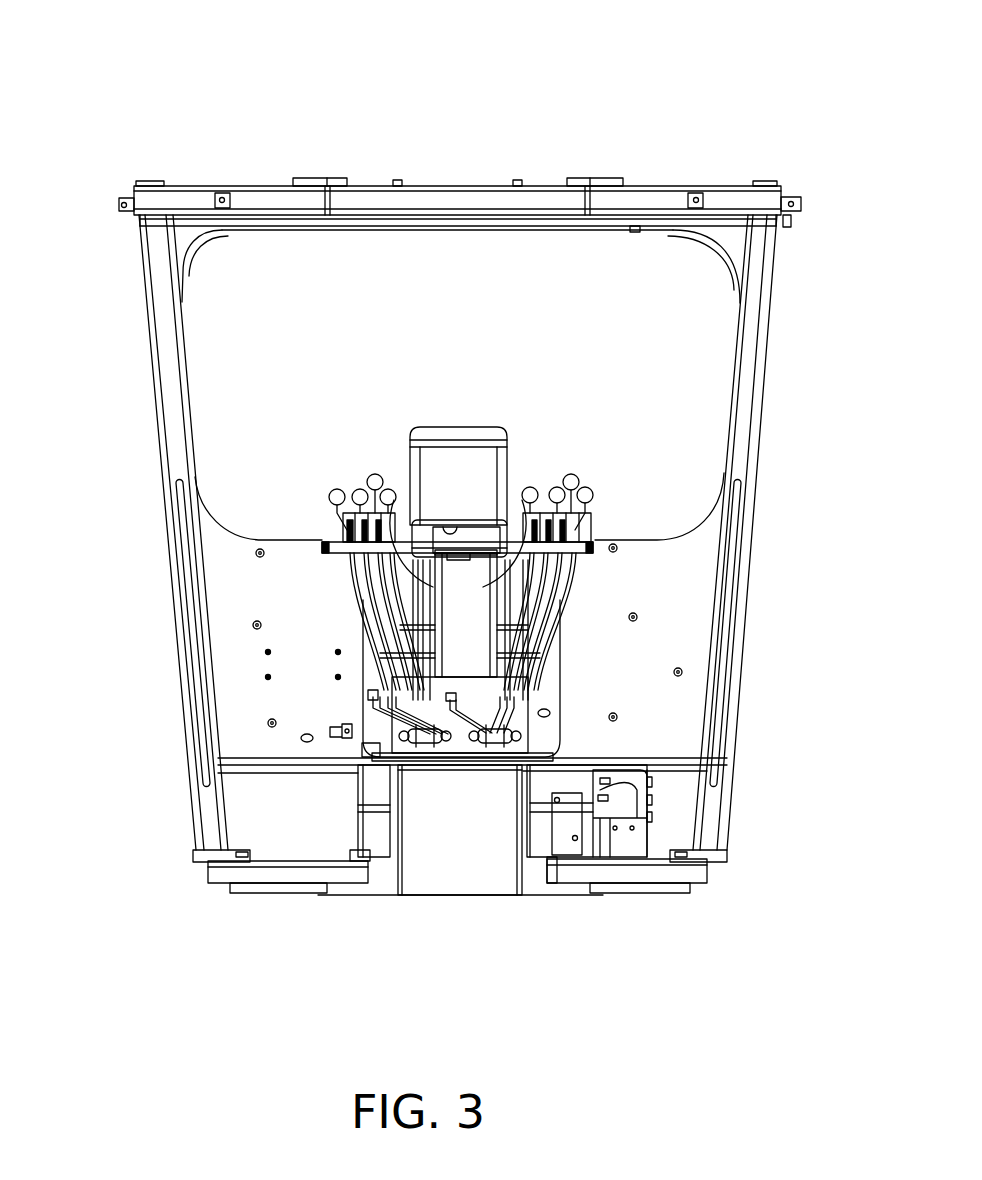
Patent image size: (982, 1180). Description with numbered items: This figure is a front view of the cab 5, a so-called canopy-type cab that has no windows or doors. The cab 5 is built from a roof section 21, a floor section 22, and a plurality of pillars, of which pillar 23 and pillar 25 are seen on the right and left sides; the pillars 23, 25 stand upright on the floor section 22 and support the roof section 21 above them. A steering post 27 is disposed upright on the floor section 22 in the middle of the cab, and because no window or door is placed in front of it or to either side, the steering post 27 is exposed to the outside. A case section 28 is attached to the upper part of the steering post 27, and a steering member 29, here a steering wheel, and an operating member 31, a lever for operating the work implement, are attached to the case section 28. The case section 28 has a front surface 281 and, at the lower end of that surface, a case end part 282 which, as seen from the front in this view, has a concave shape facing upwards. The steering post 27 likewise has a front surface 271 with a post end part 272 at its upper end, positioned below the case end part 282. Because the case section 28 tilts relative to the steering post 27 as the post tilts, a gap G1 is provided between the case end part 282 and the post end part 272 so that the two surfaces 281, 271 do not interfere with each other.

The cab 5 is at (291, 99).
The roof section 21 is at (452, 184).
The floor section 22 is at (297, 852).
The pillar 23 is at (757, 327).
The pillar 25 is at (160, 322).
The steering post 27 is at (603, 655).
The front surface of the steering post 271 is at (477, 645).
The post end part 272 is at (453, 555).
The case section 28 is at (493, 451).
The front surface of the case section 281 is at (477, 472).
The case end part 282 is at (447, 540).
The steering member 29 is at (400, 482).
The operating member 31 is at (580, 468).
The gap G1 is at (482, 537).